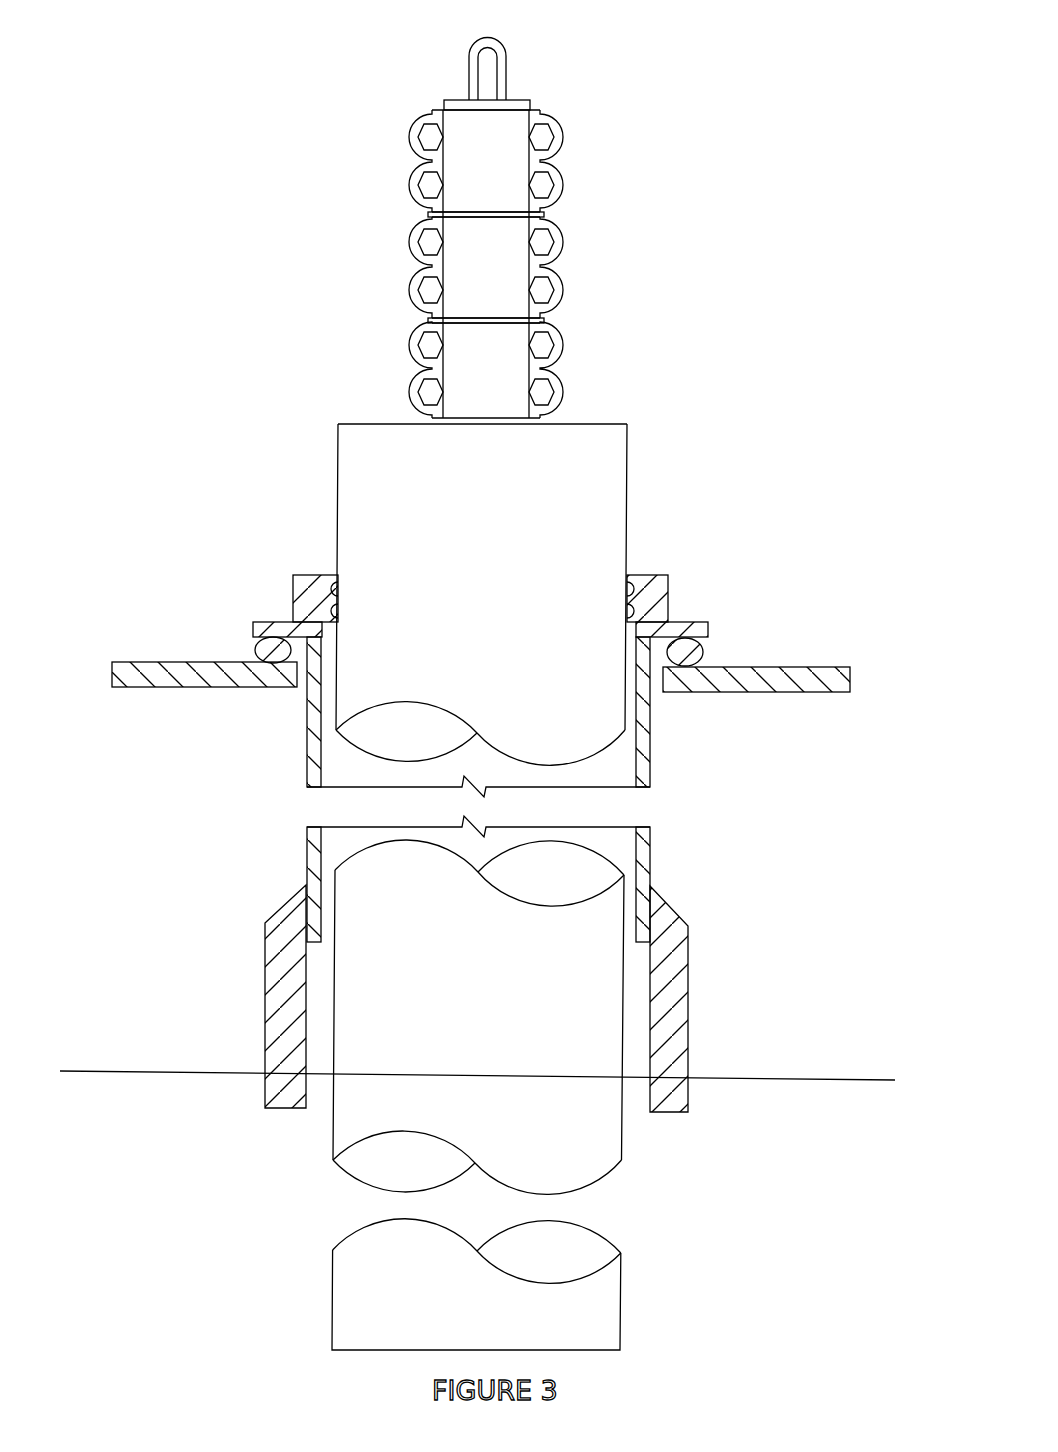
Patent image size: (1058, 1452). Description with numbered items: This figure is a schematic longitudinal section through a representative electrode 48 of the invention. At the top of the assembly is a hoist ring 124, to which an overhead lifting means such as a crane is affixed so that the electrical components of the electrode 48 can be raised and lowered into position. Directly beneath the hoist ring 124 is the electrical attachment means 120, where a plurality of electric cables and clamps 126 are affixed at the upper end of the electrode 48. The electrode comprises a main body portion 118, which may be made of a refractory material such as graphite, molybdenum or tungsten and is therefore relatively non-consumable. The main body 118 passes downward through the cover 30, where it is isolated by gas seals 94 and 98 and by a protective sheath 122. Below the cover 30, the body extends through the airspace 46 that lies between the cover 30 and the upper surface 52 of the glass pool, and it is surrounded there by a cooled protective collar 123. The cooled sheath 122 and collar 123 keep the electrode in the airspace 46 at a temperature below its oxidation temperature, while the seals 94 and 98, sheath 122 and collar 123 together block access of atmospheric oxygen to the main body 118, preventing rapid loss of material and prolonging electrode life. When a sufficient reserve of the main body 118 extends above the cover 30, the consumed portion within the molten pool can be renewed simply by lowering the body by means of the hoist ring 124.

The hoist ring 124 is at (469, 63).
The electrical attachment means 120 is at (616, 223).
The electric cables and clamps 126 is at (415, 190).
The electrode 48 is at (702, 406).
The main body portion 118 is at (628, 497).
The gas seal 94 is at (668, 580).
The sheath 122 is at (708, 628).
The gas seal 98 is at (703, 652).
The cover 30 is at (793, 693).
The airspace 46 is at (177, 830).
The cooled protective collar 123 is at (688, 985).
The upper surface of glass pool 52 is at (170, 1073).